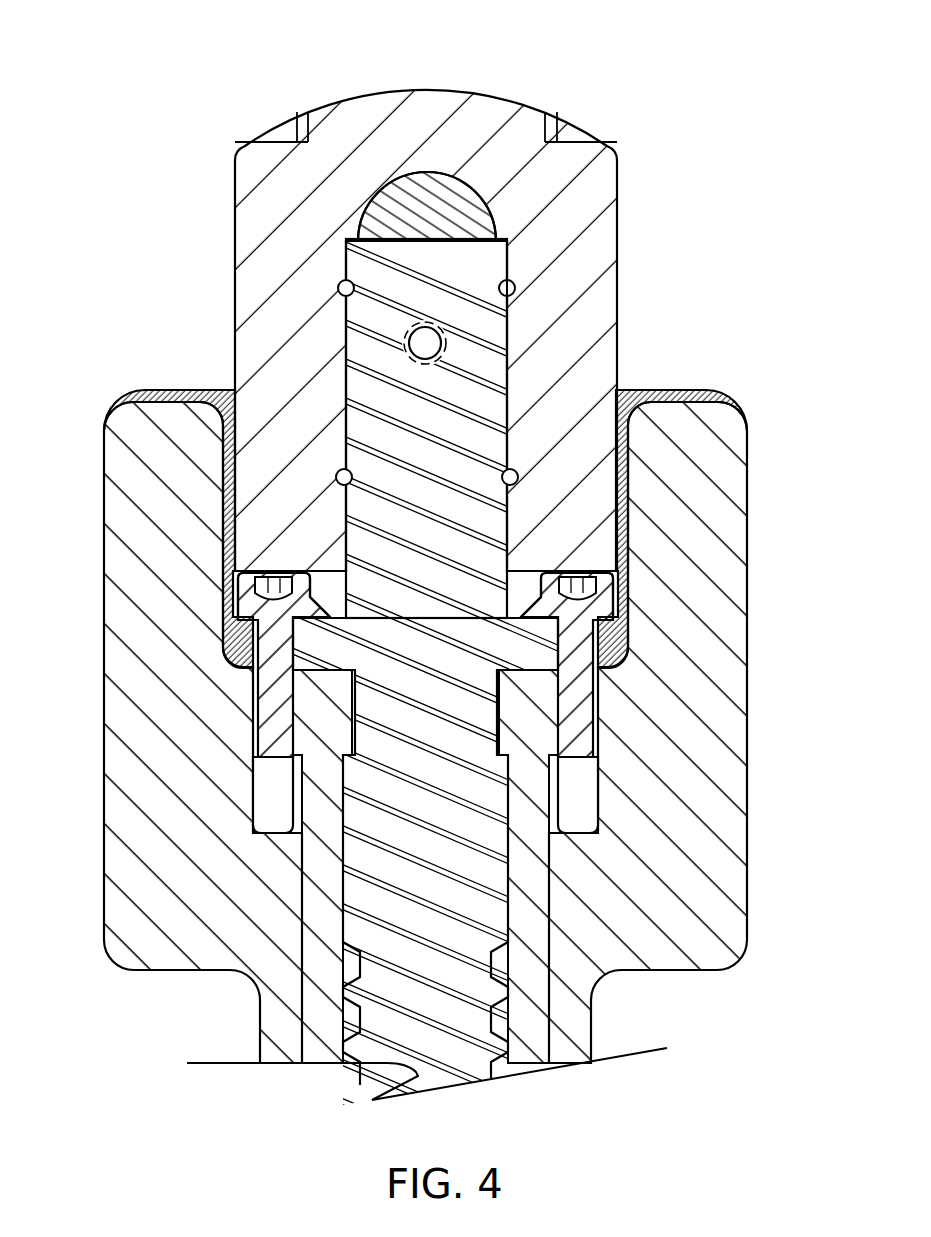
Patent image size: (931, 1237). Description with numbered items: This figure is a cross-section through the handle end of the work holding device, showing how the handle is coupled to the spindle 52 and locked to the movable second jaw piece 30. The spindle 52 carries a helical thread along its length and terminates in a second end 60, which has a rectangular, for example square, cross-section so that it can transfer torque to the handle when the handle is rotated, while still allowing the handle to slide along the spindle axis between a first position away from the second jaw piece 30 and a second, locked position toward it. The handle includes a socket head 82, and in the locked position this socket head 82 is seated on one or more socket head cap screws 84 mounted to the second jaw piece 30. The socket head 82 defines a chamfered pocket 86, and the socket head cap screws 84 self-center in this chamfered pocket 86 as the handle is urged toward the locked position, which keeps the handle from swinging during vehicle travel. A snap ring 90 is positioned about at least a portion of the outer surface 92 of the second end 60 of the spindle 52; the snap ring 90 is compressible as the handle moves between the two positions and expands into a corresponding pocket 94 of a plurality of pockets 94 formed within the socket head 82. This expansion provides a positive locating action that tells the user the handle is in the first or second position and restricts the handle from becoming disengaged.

The second jaw piece 30 is at (740, 580).
The spindle 52 is at (440, 869).
The second end of spindle 60 is at (500, 363).
The socket head 82 is at (503, 110).
The socket head cap screws 84 is at (273, 696).
The chamfered pocket 86 is at (326, 588).
The snap ring 90 is at (510, 292).
The outer surface 92 is at (505, 332).
The pocket 94 is at (512, 284).